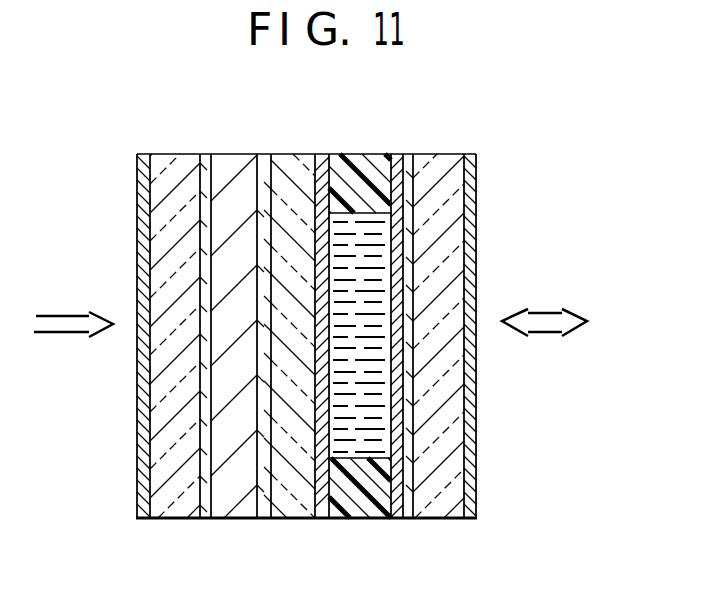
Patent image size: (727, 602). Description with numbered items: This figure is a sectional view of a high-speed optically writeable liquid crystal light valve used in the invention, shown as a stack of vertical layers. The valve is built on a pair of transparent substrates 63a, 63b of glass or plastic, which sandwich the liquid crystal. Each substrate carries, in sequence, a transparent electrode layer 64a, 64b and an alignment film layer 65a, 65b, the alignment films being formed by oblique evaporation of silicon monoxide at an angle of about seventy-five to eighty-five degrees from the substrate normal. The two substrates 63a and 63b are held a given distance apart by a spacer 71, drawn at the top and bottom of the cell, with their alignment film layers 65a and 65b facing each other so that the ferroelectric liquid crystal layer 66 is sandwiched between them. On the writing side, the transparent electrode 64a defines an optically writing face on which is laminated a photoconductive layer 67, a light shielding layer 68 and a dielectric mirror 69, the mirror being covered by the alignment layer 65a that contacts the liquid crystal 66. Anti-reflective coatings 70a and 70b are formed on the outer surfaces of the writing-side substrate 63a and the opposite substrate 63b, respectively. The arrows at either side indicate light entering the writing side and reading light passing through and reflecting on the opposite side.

The transparent substrate 63a is at (163, 177).
The transparent substrate 63b is at (445, 507).
The transparent electrode layer 64a is at (210, 157).
The transparent electrode layer 64b is at (410, 517).
The alignment film layer 65a is at (318, 520).
The alignment film layer 65b is at (398, 150).
The ferroelectric liquid crystal layer 66 is at (362, 500).
The photoconductive layer 67 is at (228, 510).
The light shielding layer 68 is at (265, 503).
The dielectric mirror 69 is at (293, 167).
The anti-reflective coating 70a is at (138, 520).
The anti-reflective coating 70b is at (470, 152).
The spacer 71 is at (362, 170).